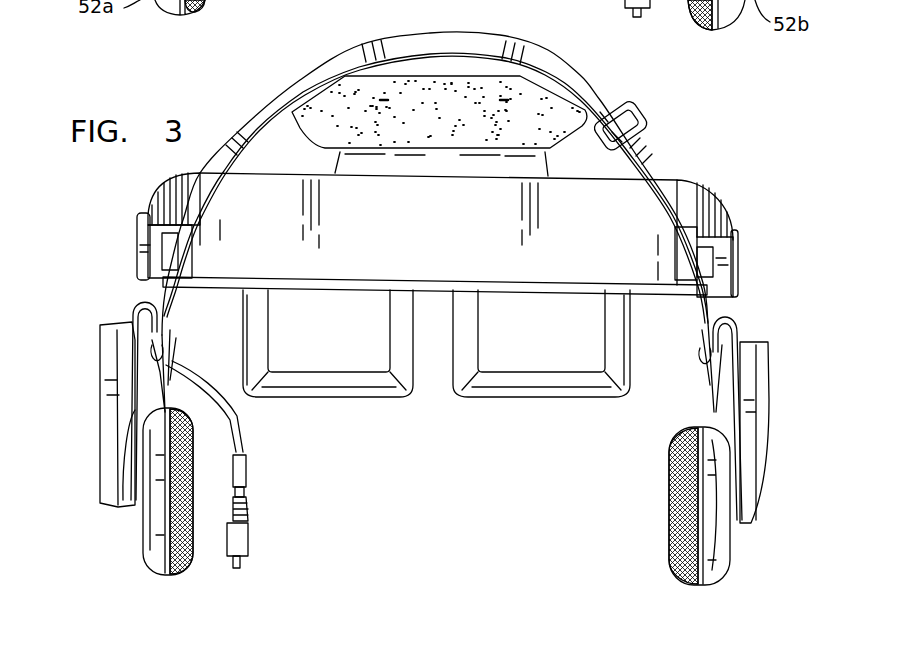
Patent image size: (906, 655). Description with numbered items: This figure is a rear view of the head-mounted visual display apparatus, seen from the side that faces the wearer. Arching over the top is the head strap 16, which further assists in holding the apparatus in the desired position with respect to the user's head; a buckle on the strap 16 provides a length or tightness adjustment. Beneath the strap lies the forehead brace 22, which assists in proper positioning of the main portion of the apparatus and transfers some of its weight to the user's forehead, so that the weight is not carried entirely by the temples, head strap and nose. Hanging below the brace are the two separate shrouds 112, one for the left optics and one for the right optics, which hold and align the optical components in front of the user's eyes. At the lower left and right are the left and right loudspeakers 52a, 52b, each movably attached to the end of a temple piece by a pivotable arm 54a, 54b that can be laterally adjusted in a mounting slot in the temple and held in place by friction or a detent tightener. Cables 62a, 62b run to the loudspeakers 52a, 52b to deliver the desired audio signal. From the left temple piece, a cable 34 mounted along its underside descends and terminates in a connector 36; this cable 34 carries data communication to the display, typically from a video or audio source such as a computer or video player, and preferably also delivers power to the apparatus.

The strap 16 is at (462, 38).
The forehead brace 22 is at (527, 168).
The cable 34 is at (242, 430).
The connector 36 is at (250, 538).
The right loudspeaker 52a is at (722, 530).
The left loudspeaker 52b is at (141, 517).
The pivotable arm 54a is at (765, 408).
The pivotable arm 54b is at (104, 388).
The cable 62a is at (737, 330).
The cable 62b is at (133, 312).
The shroud 112 is at (405, 375).